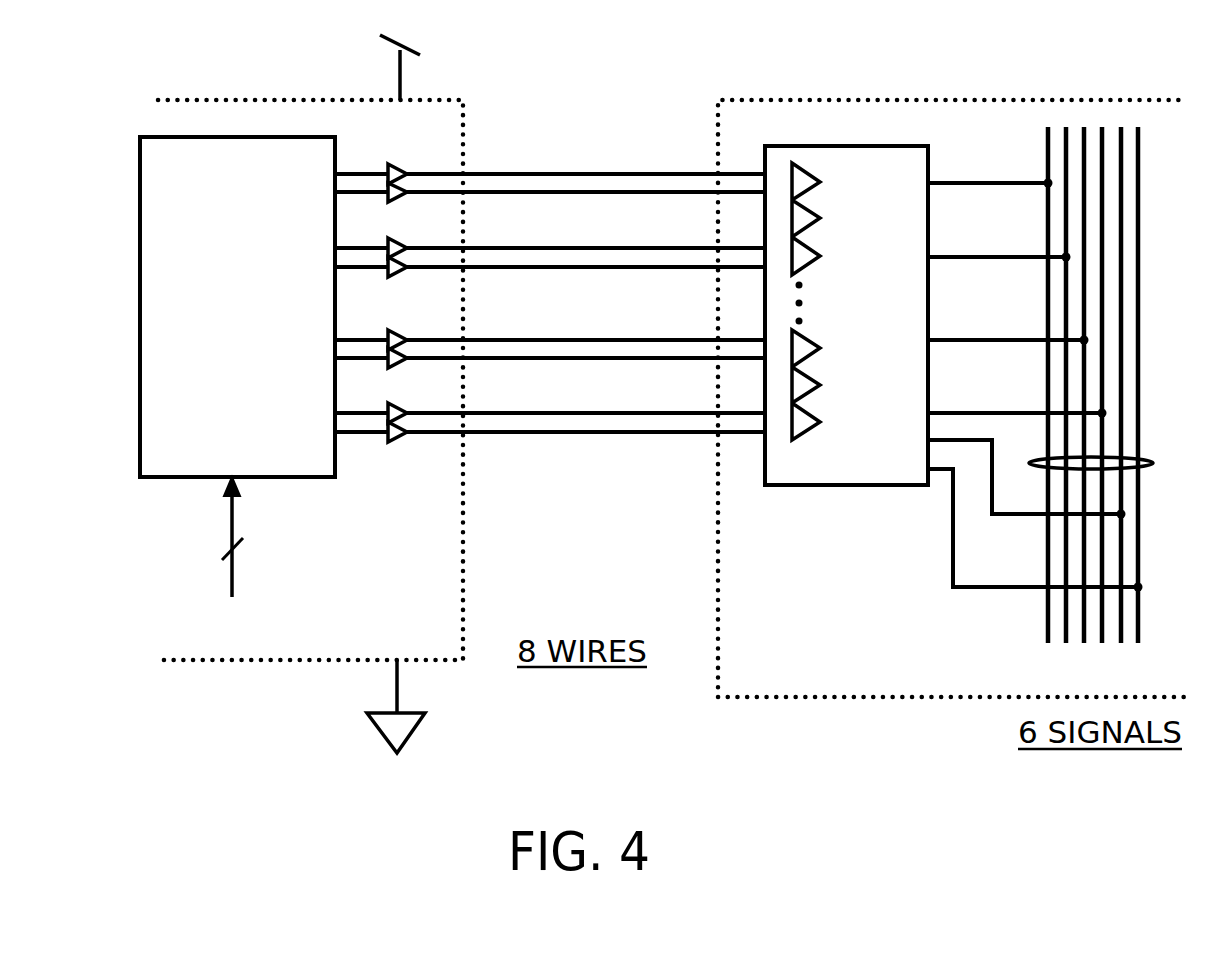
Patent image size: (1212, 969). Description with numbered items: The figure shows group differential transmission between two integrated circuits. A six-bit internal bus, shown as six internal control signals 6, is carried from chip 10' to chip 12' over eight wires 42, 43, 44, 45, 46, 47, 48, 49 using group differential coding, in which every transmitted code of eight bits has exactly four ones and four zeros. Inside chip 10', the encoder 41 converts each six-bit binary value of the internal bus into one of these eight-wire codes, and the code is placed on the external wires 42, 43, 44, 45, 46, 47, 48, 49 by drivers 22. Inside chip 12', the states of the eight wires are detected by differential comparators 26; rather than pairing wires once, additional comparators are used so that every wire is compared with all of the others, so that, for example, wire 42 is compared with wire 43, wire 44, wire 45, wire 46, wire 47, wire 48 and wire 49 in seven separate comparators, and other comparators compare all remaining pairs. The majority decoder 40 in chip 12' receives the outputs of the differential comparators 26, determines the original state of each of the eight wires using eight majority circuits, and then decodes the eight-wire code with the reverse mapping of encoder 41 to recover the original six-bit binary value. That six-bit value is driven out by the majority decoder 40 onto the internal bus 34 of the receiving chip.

The chip 10' is at (310, 394).
The chip 12' is at (954, 398).
The encoder 41 is at (321, 454).
The majority decoder 40 is at (914, 473).
The drivers 22 is at (400, 165).
The differential comparators 26 is at (818, 184).
The internal control signals 6 is at (243, 537).
The wire 42 is at (531, 174).
The wire 43 is at (592, 192).
The wire 44 is at (531, 248).
The wire 45 is at (592, 267).
The wire 46 is at (531, 340).
The wire 47 is at (592, 358).
The wire 48 is at (531, 413).
The wire 49 is at (592, 432).
The internal bus 34 is at (1153, 463).